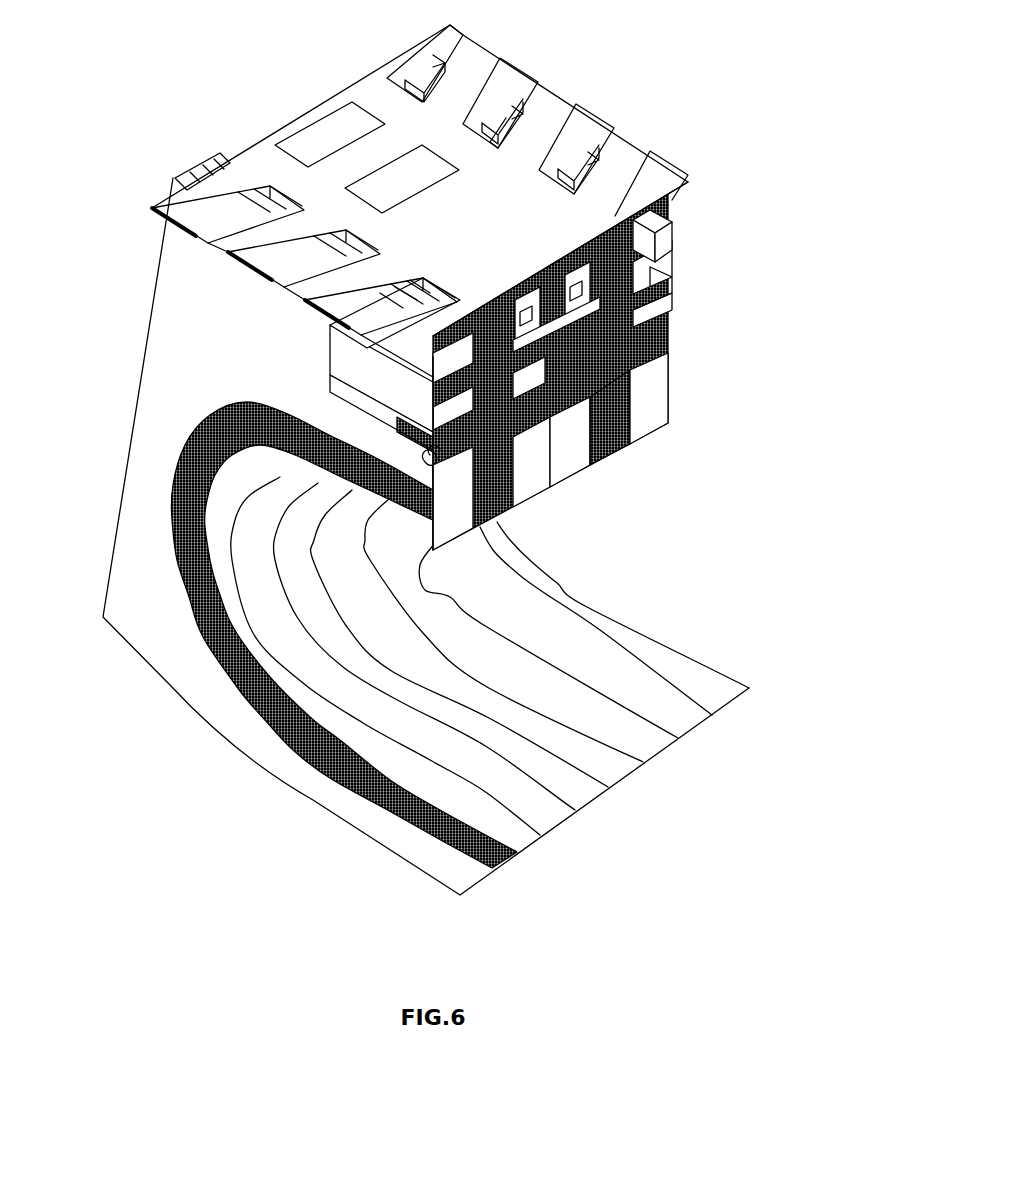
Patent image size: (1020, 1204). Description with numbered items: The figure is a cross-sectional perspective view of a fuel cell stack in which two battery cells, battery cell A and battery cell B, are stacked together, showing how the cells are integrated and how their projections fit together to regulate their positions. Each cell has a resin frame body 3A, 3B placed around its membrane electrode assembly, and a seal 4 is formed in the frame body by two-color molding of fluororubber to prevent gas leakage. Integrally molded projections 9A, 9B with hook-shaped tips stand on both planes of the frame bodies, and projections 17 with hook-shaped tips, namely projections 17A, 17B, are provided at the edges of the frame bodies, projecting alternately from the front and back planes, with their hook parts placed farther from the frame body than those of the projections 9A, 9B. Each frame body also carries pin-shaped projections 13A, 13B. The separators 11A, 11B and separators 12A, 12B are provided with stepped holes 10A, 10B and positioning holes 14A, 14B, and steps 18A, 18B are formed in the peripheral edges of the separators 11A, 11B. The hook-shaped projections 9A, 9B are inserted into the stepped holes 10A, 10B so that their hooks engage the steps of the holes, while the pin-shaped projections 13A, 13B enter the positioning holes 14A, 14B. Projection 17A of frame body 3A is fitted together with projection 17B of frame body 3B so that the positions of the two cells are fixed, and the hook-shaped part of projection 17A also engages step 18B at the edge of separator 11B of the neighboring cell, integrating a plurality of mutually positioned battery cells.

The seal 4 is at (182, 461).
The projections 17 is at (455, 300).
The projection 17A is at (660, 243).
The projection 17B is at (450, 268).
The step 18A is at (670, 222).
The step 18B is at (545, 300).
The stepped hole 10A is at (672, 262).
The stepped hole 10B is at (417, 388).
The projection 9A is at (672, 290).
The projection 9B is at (433, 418).
The positioning hole 14A is at (688, 312).
The positioning hole 14B is at (420, 463).
The pin-shaped projection 13A is at (672, 335).
The pin-shaped projection 13B is at (433, 515).
The separator 12A is at (563, 465).
The separator 12B is at (457, 552).
The separator 11A is at (643, 427).
The separator 11B is at (523, 485).
The frame body 3A is at (607, 455).
The frame body 3B is at (498, 532).